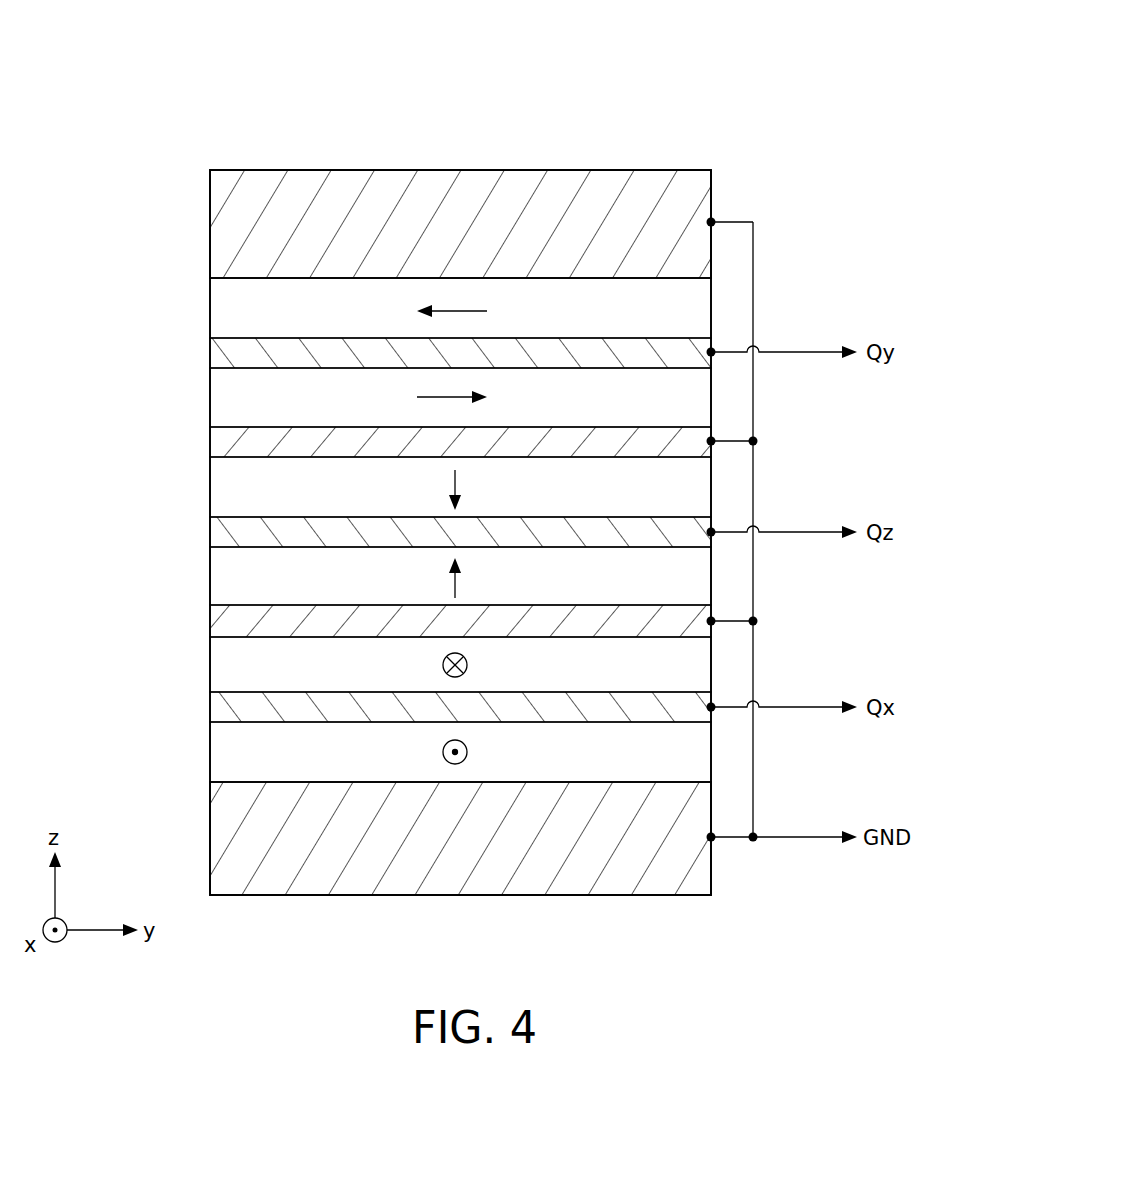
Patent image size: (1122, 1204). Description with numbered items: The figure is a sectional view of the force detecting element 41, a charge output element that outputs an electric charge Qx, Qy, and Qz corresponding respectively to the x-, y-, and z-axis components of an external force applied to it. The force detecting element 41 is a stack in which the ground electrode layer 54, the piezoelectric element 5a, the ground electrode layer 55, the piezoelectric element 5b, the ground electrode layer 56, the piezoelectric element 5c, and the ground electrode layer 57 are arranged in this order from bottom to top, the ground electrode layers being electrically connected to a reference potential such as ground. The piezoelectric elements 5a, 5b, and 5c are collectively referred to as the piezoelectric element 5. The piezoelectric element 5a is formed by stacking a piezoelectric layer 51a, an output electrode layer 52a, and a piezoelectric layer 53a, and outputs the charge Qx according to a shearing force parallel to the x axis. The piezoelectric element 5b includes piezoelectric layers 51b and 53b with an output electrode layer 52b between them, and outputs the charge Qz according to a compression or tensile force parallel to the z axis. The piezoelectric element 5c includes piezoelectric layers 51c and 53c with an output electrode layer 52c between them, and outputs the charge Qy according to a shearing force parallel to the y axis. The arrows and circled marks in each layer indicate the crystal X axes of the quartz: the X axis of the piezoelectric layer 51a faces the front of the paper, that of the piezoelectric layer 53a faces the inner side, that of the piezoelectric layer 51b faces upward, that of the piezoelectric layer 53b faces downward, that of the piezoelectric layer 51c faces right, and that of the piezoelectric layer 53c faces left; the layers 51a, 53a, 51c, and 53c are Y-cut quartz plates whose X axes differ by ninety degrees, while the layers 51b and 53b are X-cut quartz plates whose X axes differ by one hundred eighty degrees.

The force detecting element 41 is at (714, 113).
The ground electrode layer 57 is at (222, 226).
The ground electrode layer 54 is at (222, 824).
The ground electrode layer 56 is at (222, 441).
The ground electrode layer 55 is at (222, 619).
The piezoelectric element 5 is at (508, 516).
The piezoelectric element 5a is at (509, 699).
The piezoelectric element 5b is at (495, 518).
The piezoelectric element 5c is at (494, 339).
The piezoelectric layer 51a is at (692, 750).
The output electrode layer 52a is at (694, 703).
The piezoelectric layer 53a is at (697, 663).
The piezoelectric layer 51b is at (692, 575).
The output electrode layer 52b is at (692, 527).
The piezoelectric layer 53b is at (692, 483).
The piezoelectric layer 51c is at (690, 397).
The output electrode layer 52c is at (690, 347).
The piezoelectric layer 53c is at (692, 307).